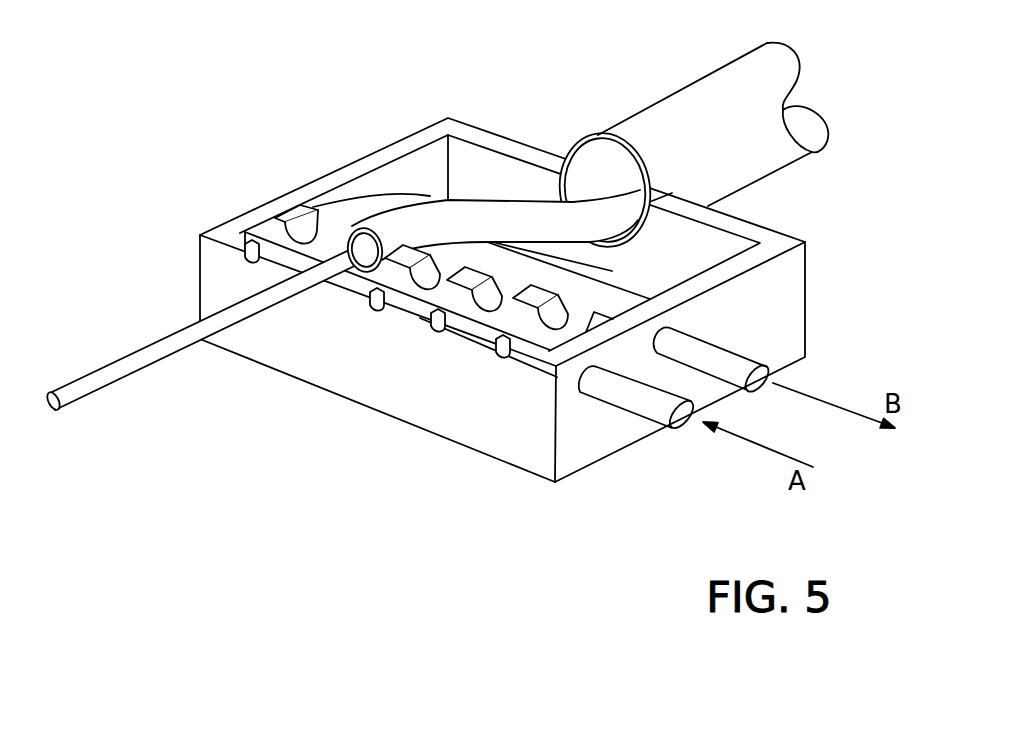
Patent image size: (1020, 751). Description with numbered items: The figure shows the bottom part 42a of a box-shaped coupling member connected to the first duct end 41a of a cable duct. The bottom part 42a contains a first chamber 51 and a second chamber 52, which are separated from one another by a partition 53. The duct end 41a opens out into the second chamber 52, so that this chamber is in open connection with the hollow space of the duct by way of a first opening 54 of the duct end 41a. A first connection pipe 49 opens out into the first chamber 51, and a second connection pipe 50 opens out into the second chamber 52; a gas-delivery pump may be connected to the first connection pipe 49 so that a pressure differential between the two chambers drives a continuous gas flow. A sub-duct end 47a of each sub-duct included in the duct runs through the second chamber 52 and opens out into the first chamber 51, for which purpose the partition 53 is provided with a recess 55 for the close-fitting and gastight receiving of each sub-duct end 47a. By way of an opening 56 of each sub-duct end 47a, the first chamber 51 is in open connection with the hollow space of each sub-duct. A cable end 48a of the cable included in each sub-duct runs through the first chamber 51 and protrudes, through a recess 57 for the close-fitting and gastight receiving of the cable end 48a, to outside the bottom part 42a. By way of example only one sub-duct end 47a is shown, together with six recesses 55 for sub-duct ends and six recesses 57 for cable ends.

The first duct end 41a is at (783, 172).
The bottom part 42a is at (250, 350).
The sub-duct end 47a is at (530, 222).
The cable end 48a is at (118, 372).
The first connection pipe 49 is at (648, 400).
The second connection pipe 50 is at (713, 353).
The first chamber 51 is at (264, 214).
The second chamber 52 is at (600, 293).
The partition 53 is at (527, 315).
The first opening 54 is at (594, 166).
The recess 55 is at (553, 322).
The opening 56 is at (362, 230).
The recess 57 is at (242, 224).